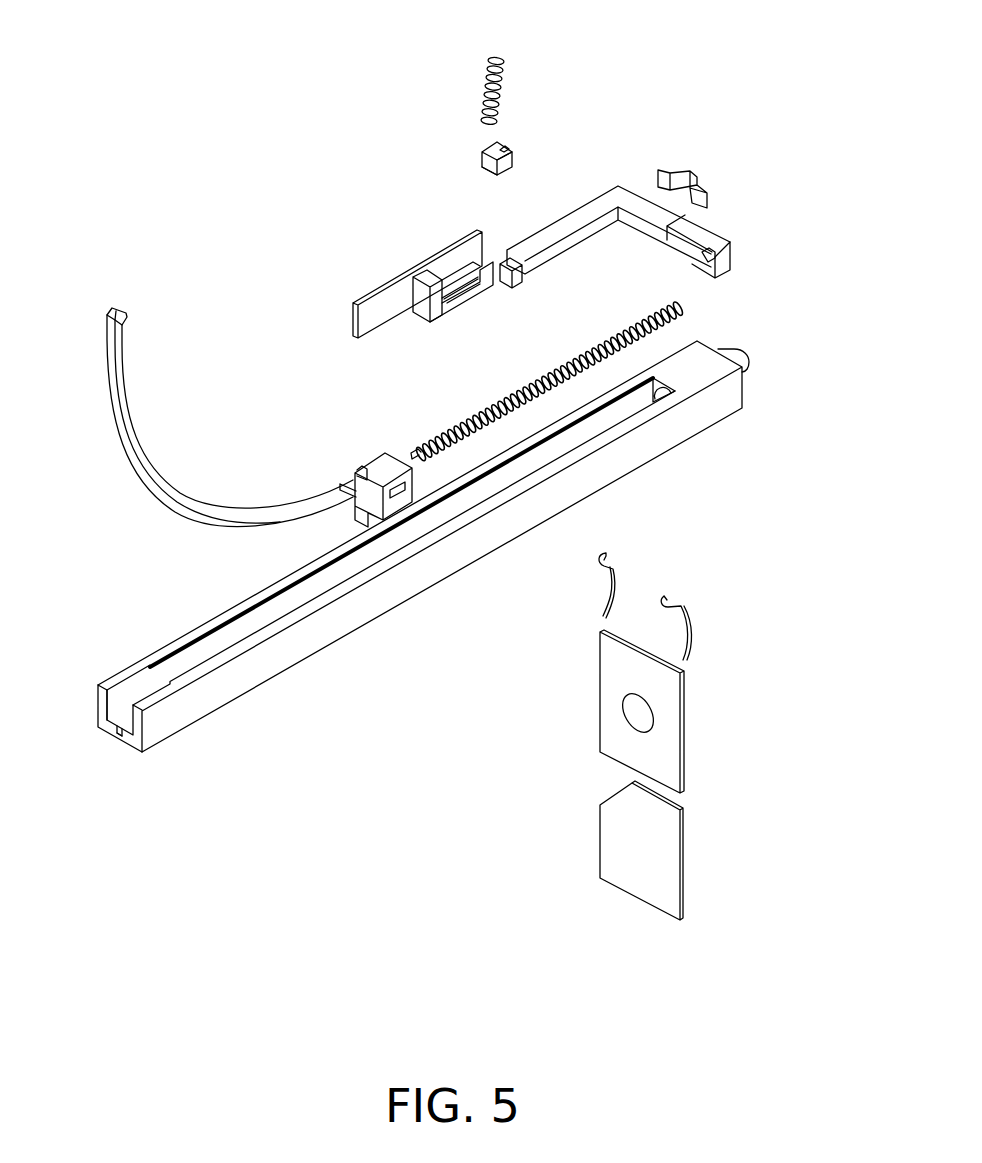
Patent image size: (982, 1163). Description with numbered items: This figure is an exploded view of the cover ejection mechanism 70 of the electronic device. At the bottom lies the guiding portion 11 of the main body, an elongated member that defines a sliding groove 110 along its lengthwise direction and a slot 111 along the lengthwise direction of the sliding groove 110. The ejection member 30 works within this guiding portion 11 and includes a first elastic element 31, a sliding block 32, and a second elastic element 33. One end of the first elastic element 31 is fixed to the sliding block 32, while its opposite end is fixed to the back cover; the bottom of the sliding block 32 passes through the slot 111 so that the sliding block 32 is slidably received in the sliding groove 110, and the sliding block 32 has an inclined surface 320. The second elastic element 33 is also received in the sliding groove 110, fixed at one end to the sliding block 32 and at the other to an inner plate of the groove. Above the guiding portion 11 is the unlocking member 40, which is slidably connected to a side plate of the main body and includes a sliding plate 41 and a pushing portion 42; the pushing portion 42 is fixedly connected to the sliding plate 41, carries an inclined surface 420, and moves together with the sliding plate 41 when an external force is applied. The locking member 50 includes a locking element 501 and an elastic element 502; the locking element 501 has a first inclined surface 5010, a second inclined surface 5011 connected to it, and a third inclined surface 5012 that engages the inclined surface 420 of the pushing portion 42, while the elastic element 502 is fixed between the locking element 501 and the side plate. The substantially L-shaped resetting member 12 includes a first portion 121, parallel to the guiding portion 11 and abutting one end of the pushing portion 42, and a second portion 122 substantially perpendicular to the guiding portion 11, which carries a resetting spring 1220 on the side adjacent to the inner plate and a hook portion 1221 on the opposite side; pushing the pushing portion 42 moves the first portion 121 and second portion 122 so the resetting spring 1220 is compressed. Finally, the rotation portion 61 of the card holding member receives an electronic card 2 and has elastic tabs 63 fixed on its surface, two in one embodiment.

The cover ejection mechanism 70 is at (222, 76).
The guiding portion 11 is at (402, 601).
The sliding groove 110 is at (108, 702).
The slot 111 is at (134, 774).
The ejection member 30 is at (395, 414).
The first elastic element 31 is at (245, 520).
The sliding block 32 is at (327, 465).
The inclined surface 320 is at (299, 458).
The second elastic element 33 is at (424, 440).
The unlocking member 40 is at (381, 251).
The sliding plate 41 is at (368, 292).
The pushing portion 42 is at (413, 255).
The inclined surface 420 is at (493, 262).
The resetting member 12 is at (675, 229).
The first portion 121 is at (598, 225).
The second portion 122 is at (733, 233).
The hook portion 1221 is at (695, 252).
The resetting spring 1220 is at (728, 177).
The locking member 50 is at (593, 120).
The locking element 501 is at (568, 138).
The first inclined surface 5010 is at (512, 160).
The second inclined surface 5011 is at (506, 146).
The third inclined surface 5012 is at (541, 171).
The elastic element 502 is at (505, 80).
The rotation portion 61 is at (672, 747).
The elastic tab 63 is at (692, 630).
The electronic card 2 is at (663, 858).